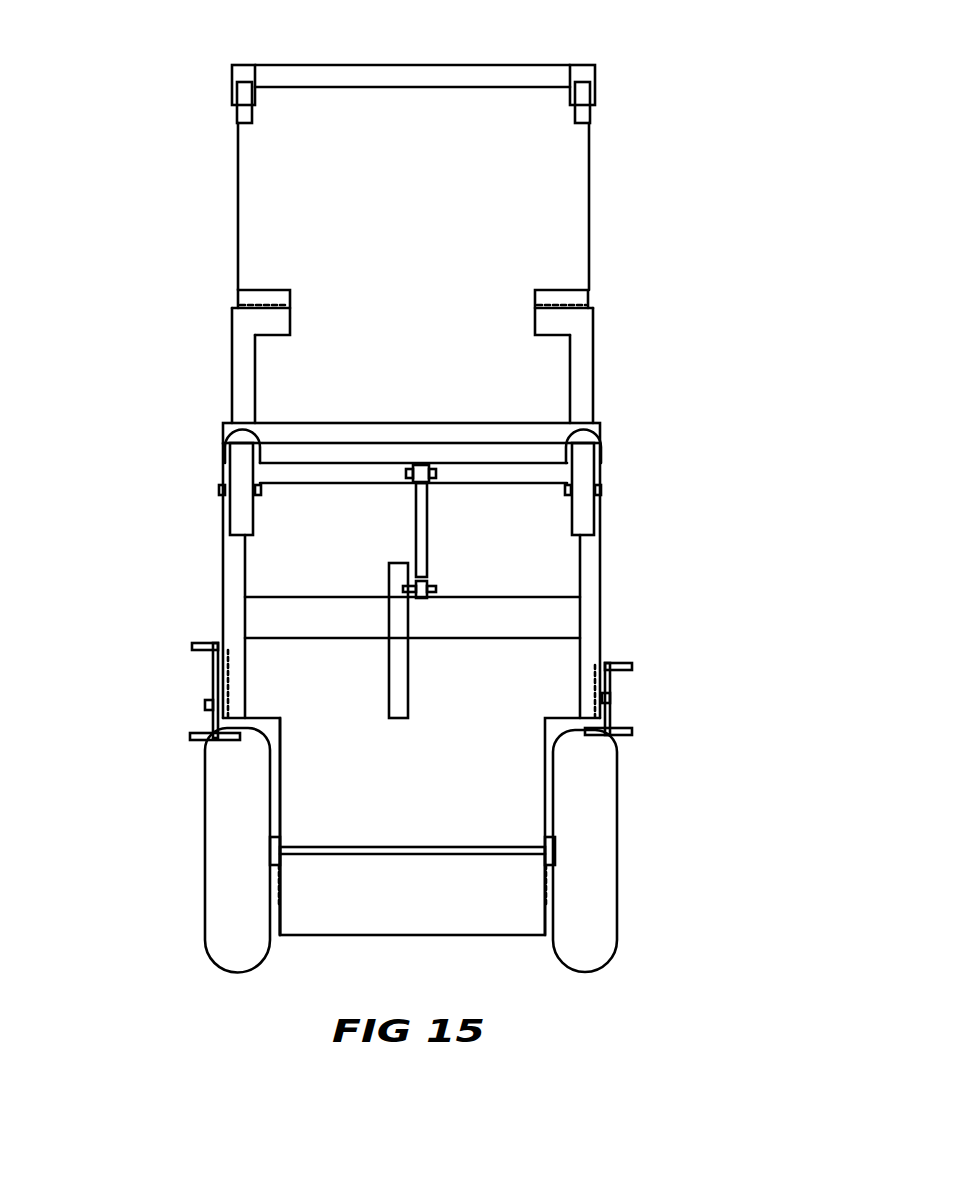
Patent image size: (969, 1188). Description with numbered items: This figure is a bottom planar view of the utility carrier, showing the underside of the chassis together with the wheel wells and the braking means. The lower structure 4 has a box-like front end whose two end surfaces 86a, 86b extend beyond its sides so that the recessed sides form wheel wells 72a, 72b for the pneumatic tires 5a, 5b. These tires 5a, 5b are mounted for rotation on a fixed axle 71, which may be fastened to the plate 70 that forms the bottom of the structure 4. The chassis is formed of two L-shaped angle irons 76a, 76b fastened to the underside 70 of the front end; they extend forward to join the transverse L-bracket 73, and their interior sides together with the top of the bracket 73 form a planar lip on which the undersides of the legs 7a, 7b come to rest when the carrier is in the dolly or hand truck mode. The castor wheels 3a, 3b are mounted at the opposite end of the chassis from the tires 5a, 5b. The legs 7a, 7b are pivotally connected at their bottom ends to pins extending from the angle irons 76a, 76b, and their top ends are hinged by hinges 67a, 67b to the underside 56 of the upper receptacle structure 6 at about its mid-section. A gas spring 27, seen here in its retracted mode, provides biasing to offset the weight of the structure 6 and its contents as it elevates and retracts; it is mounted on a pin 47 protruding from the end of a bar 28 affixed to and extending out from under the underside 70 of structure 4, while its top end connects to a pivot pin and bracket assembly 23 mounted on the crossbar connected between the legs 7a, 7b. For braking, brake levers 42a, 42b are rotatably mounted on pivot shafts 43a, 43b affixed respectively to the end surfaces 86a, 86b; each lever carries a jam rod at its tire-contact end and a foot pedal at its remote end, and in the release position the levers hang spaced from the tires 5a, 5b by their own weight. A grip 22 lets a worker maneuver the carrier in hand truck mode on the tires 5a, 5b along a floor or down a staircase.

The grip 22 is at (385, 78).
The structure 6 is at (305, 213).
The underside of structure 56 is at (520, 213).
The hinge 67a is at (257, 305).
The hinge 67b is at (565, 305).
The leg 7a is at (240, 388).
The leg 7b is at (582, 388).
The transverse L-bracket 73 is at (512, 430).
The pivot pin and bracket assembly 23 is at (423, 468).
The castor wheel 3a is at (240, 490).
The castor wheel 3b is at (585, 490).
The gas spring 27 is at (430, 538).
The pin 47 is at (430, 590).
The angle iron 76a is at (238, 585).
The angle iron 76b is at (588, 585).
The underside 70 is at (522, 683).
The bar 28 is at (410, 690).
The brake lever 42a is at (268, 728).
The brake lever 42b is at (557, 727).
The wheel well 72a is at (220, 688).
The wheel well 72b is at (603, 692).
The pivot shaft 43a is at (207, 703).
The pivot shaft 43b is at (610, 700).
The end surface 86a is at (223, 673).
The end surface 86b is at (580, 680).
The pneumatic tire 5a is at (235, 813).
The pneumatic tire 5b is at (590, 813).
The fixed axle 71 is at (387, 845).
The structure 4 is at (350, 790).